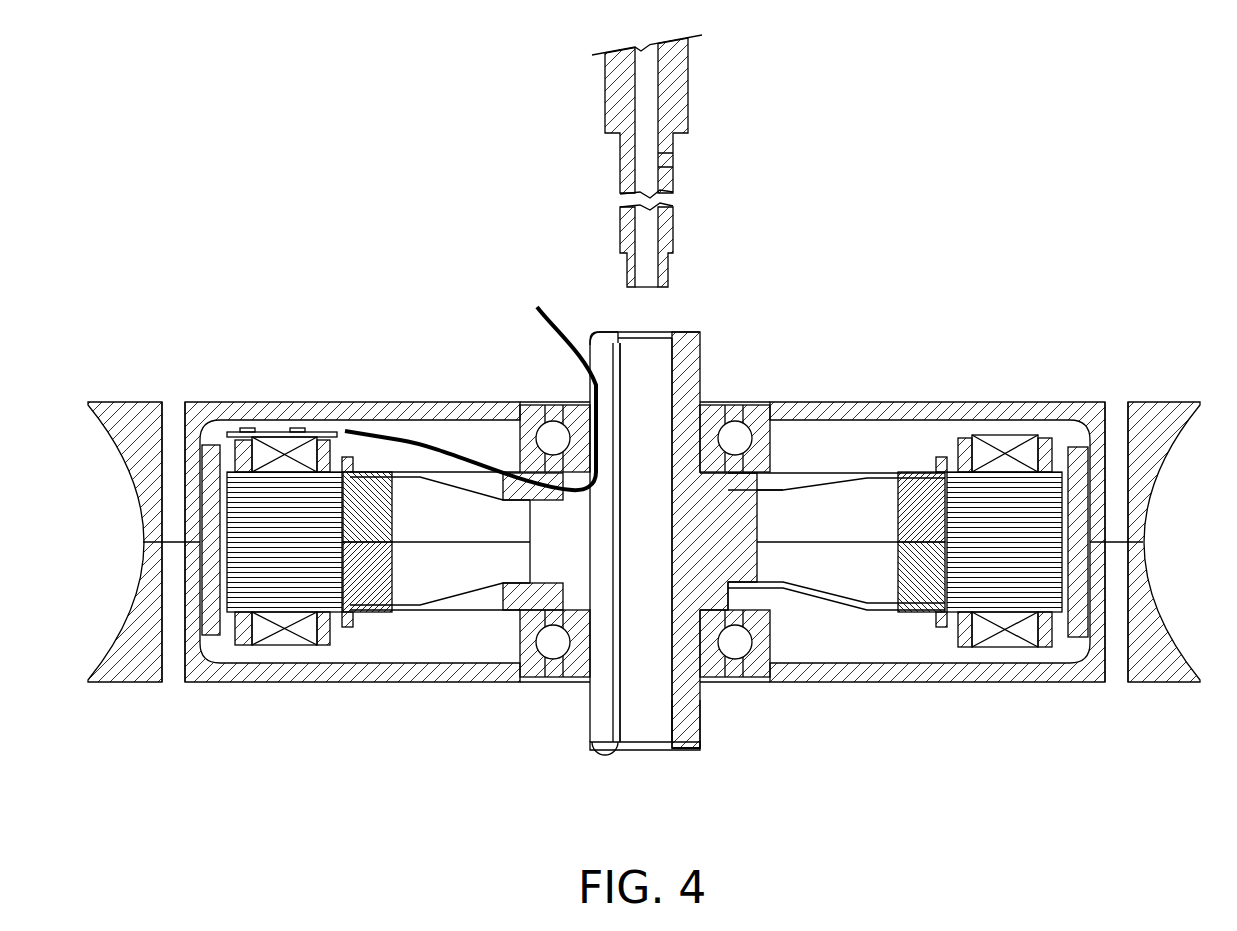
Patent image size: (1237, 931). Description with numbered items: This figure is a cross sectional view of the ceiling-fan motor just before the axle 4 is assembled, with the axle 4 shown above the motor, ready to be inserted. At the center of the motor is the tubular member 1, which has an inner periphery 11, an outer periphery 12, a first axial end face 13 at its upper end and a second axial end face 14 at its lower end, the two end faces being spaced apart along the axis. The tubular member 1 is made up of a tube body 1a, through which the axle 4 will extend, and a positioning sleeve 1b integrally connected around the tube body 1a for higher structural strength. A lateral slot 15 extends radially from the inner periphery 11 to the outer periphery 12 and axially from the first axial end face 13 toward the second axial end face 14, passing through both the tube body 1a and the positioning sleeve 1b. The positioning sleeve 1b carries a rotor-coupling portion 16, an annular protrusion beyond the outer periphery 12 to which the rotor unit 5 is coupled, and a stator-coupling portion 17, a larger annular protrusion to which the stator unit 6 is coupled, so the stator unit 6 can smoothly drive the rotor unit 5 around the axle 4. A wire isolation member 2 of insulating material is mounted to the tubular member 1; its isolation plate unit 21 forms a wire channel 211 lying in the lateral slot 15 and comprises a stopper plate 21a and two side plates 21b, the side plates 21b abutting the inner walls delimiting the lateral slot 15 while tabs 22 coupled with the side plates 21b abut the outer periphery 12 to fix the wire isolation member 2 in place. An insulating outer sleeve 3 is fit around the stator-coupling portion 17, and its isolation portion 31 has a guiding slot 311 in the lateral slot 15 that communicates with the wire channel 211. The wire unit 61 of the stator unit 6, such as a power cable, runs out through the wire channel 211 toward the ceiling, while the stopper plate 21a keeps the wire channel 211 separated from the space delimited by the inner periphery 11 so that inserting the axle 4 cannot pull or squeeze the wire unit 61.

The tubular member 1 is at (778, 550).
The tube body 1a is at (697, 705).
The positioning sleeve 1b is at (740, 580).
The inner periphery 11 is at (672, 392).
The outer periphery 12 is at (693, 383).
The first axial end face 13 is at (685, 332).
The second axial end face 14 is at (687, 752).
The lateral slot 15 is at (587, 330).
The rotor-coupling portion 16 is at (727, 487).
The stator-coupling portion 17 is at (747, 527).
The wire isolation member 2 is at (584, 521).
The isolation plate unit 21 is at (647, 522).
The stopper plate 21a is at (597, 438).
The side plates 21b is at (513, 418).
The wire channel 211 is at (580, 647).
The tabs 22 is at (582, 392).
The outer sleeve 3 is at (530, 557).
The isolation portion 31 is at (540, 573).
The guiding slot 311 is at (520, 524).
The axle 4 is at (677, 82).
The rotor unit 5 is at (148, 393).
The stator unit 6 is at (275, 643).
The wire unit 61 is at (537, 327).